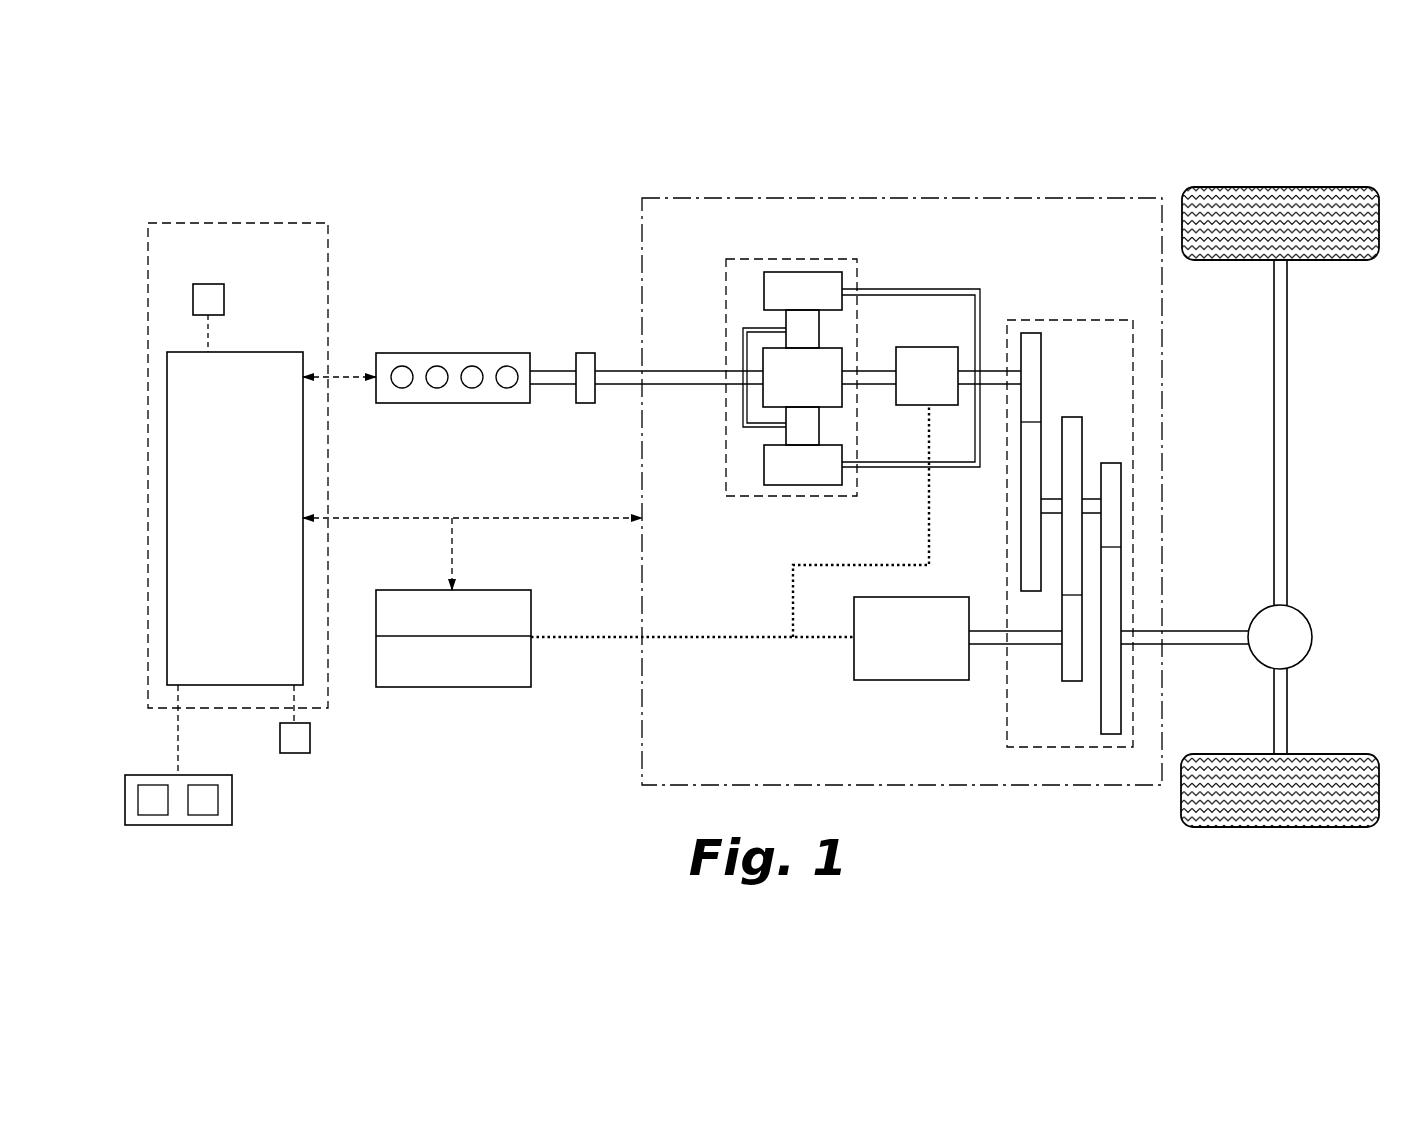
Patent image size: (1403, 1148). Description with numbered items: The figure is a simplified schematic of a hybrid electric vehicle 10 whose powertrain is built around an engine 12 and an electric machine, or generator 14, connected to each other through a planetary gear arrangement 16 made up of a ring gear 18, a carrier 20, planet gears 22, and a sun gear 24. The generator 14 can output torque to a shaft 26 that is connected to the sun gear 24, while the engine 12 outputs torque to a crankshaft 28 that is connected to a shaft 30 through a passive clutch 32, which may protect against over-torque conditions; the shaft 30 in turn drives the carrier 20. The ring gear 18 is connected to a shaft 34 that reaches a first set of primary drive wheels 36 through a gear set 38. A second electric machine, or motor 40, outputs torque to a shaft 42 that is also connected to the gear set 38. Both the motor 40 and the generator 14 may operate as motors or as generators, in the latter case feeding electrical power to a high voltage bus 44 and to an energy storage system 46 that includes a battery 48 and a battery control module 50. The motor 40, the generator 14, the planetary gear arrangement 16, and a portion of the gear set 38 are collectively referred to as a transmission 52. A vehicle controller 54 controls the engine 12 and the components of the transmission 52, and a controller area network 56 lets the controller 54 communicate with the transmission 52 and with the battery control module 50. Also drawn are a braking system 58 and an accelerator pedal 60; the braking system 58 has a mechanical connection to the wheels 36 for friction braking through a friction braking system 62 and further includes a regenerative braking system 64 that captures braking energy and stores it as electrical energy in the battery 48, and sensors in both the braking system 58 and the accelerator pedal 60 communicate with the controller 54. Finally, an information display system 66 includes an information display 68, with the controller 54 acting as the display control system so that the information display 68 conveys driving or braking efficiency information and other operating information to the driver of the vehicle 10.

The vehicle 10 is at (1118, 152).
The engine 12 is at (456, 353).
The generator 14 is at (922, 347).
The planetary gear arrangement 16 is at (790, 258).
The ring gear 18 is at (762, 285).
The carrier 20 is at (742, 347).
The planet gears 22 is at (785, 322).
The sun gear 24 is at (845, 394).
The shaft 26 is at (875, 370).
The crankshaft 28 is at (561, 387).
The shaft 30 is at (621, 387).
The passive clutch 32 is at (580, 353).
The shaft 34 is at (998, 370).
The primary drive wheels 36 is at (1318, 265).
The gear set 38 is at (1078, 750).
The motor 40 is at (915, 680).
The shaft 42 is at (992, 630).
The high voltage bus 44 is at (733, 637).
The energy storage system 46 is at (437, 640).
The battery 48 is at (487, 590).
The battery control module 50 is at (487, 687).
The transmission 52 is at (640, 240).
The vehicle controller 54 is at (250, 352).
The controller area network 56 is at (395, 518).
The braking system 58 is at (233, 800).
The accelerator pedal 60 is at (293, 753).
The friction braking system 62 is at (152, 815).
The regenerative braking system 64 is at (200, 815).
The information display system 66 is at (233, 223).
The information display 68 is at (208, 284).